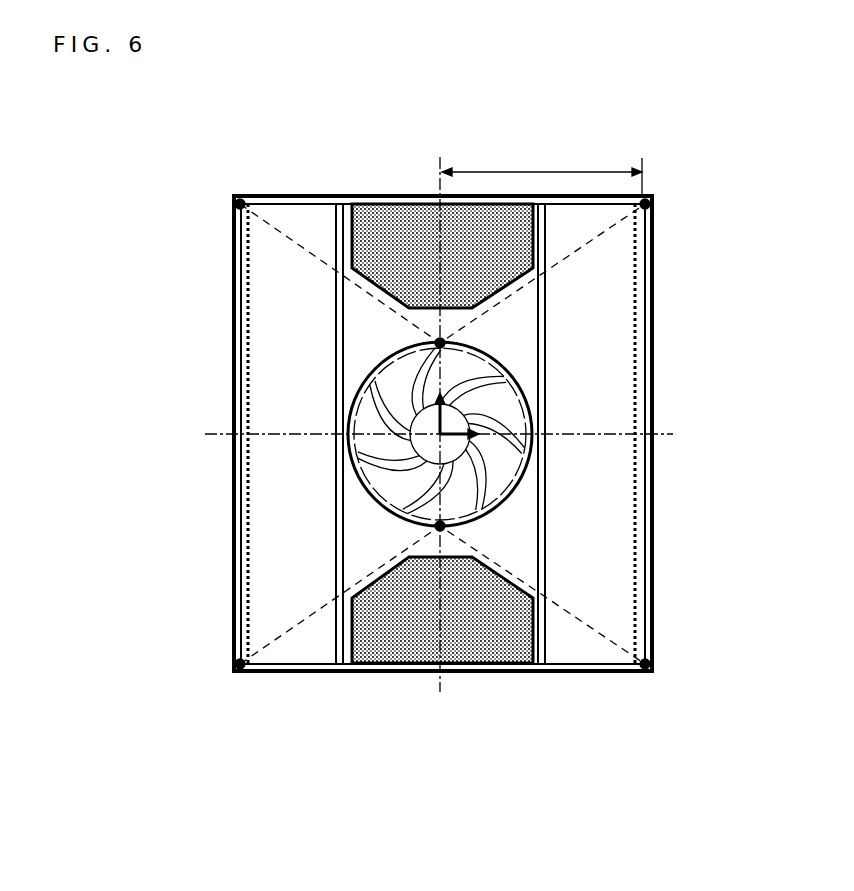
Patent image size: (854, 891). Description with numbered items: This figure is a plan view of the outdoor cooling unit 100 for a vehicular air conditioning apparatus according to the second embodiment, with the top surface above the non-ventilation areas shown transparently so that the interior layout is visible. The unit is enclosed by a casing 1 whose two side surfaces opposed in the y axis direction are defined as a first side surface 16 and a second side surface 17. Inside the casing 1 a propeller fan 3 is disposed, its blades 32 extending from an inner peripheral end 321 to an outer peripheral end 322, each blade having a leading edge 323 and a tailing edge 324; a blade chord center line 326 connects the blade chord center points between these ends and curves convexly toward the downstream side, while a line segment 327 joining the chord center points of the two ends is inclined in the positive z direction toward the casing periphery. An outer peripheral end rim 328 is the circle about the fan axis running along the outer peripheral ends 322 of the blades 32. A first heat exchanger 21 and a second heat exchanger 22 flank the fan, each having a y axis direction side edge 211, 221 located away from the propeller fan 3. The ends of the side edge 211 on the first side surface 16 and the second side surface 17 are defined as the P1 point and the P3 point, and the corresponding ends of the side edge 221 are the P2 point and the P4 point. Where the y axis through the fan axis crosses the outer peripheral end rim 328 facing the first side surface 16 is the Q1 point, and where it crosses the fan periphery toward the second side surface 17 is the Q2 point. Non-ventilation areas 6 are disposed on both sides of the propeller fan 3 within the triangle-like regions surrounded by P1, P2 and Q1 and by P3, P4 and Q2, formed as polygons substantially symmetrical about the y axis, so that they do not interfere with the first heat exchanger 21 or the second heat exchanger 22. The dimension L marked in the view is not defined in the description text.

The outdoor cooling unit 100 is at (472, 757).
The casing 1 is at (443, 447).
The first side surface 16 is at (320, 194).
The second side surface 17 is at (305, 673).
The first heat exchanger 21 is at (240, 434).
The y axis direction side edge 211 is at (242, 538).
The second heat exchanger 22 is at (637, 434).
The y axis direction side edge 221 is at (645, 535).
The non-ventilation area 6 is at (395, 225).
The propeller fan 3 is at (428, 405).
The blade 32 is at (429, 399).
The inner peripheral end 321 is at (424, 450).
The outer peripheral end 322 is at (400, 372).
The leading edge 323 is at (450, 343).
The tailing edge 324 is at (415, 428).
The blade chord center line 326 is at (395, 410).
The line segment 327 is at (490, 385).
The outer peripheral end rim 328 is at (528, 400).
The P1 point P1 is at (237, 204).
The P2 point P2 is at (648, 203).
The P3 point P3 is at (238, 664).
The P4 point P4 is at (648, 663).
The Q1 point Q1 is at (438, 343).
The Q2 point Q2 is at (443, 527).
The length L is at (542, 170).